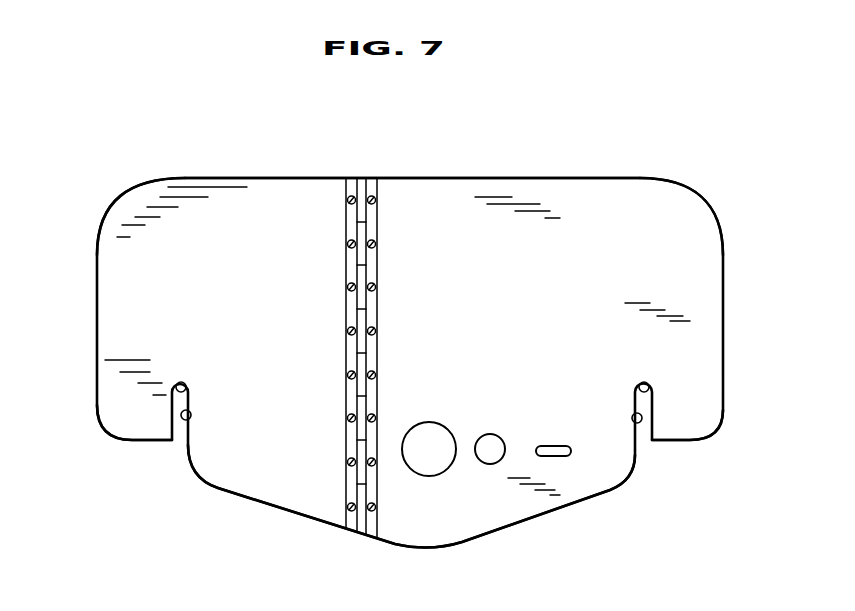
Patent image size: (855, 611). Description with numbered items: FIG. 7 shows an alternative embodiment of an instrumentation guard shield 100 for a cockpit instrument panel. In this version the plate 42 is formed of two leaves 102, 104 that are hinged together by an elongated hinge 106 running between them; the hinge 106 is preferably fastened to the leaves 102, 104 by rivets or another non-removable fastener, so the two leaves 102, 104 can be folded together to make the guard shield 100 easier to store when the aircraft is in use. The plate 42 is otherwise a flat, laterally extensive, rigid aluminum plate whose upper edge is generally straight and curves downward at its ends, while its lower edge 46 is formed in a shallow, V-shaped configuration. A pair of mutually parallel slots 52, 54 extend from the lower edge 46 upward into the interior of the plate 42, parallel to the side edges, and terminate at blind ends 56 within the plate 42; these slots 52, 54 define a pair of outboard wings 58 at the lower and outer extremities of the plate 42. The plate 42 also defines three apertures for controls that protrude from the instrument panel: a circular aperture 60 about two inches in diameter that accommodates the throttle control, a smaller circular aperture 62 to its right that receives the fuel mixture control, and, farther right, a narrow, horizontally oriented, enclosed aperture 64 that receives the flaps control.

The guard shield 100 is at (597, 150).
The plate 42 is at (457, 200).
The leaf 102 is at (668, 228).
The leaf 104 is at (140, 280).
The hinge 106 is at (352, 258).
The blind end 56 is at (203, 375).
The slot 52 is at (190, 412).
The slot 54 is at (633, 412).
The outboard wing 58 is at (138, 422).
The circular aperture 60 is at (427, 472).
The circular aperture 62 is at (498, 437).
The enclosed aperture 64 is at (560, 455).
The lower edge 46 is at (284, 510).